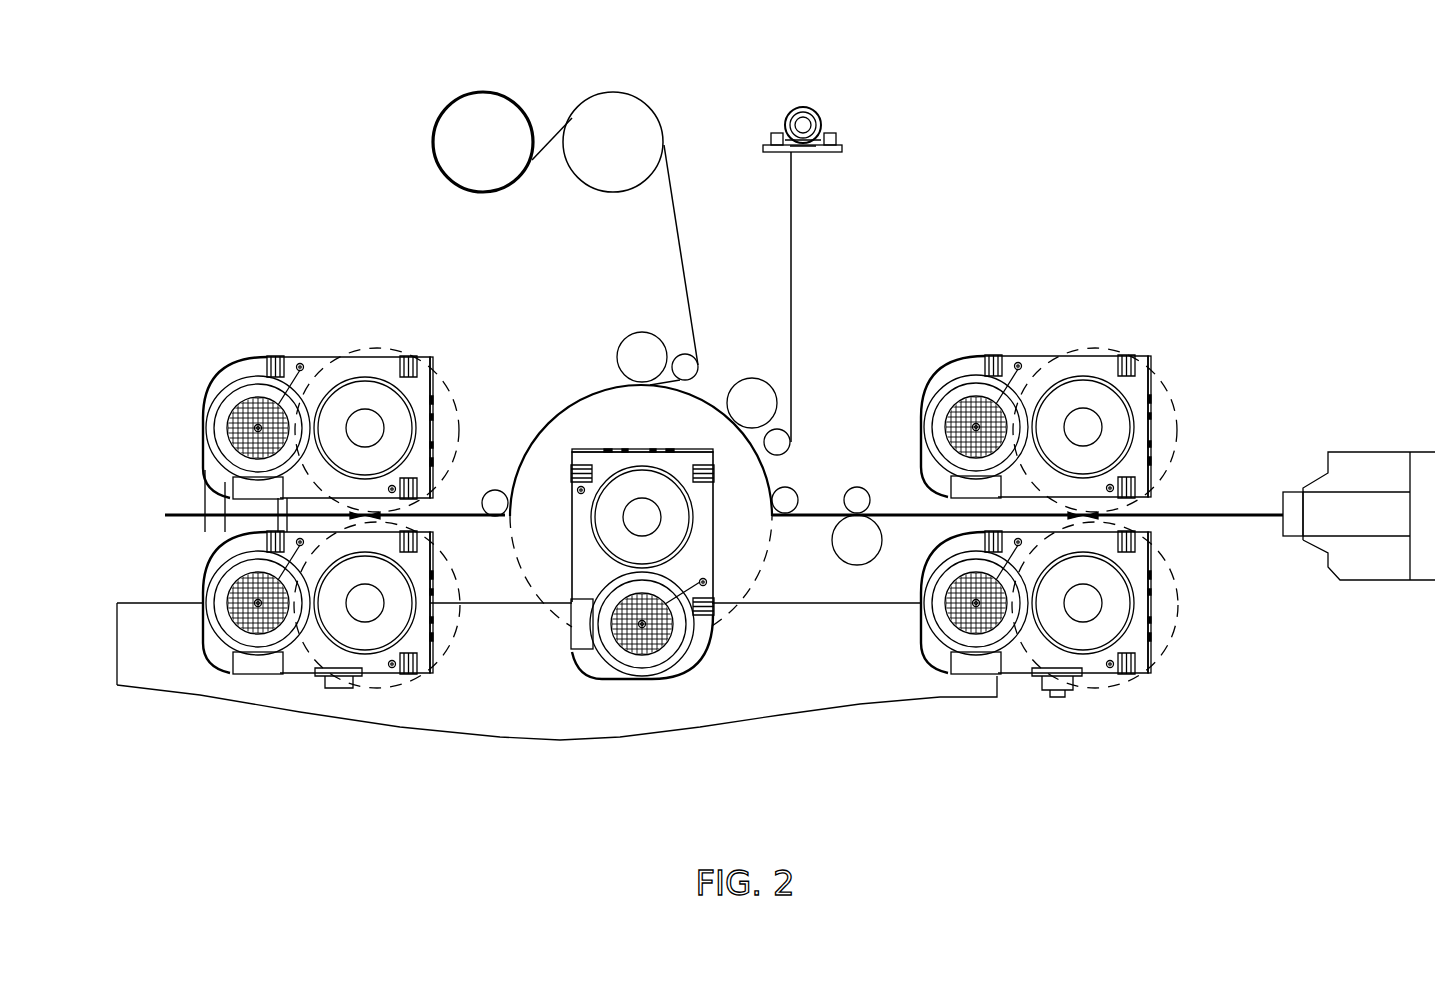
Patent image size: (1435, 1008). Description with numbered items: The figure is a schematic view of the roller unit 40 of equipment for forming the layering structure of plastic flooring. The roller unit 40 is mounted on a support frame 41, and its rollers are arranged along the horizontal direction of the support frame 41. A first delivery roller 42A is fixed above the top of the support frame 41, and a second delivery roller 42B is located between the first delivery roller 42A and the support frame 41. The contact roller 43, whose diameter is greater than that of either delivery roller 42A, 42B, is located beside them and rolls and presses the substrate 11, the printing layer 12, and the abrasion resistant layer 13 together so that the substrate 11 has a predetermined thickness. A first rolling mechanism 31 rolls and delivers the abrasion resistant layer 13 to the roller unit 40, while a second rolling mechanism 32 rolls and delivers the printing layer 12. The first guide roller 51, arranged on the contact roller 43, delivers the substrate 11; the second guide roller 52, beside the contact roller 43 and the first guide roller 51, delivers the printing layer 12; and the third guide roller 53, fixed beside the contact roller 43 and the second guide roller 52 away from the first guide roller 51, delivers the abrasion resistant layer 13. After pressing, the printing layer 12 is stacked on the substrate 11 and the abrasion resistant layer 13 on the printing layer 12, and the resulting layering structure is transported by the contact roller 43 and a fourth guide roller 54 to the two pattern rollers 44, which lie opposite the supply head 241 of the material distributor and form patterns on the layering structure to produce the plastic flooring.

The substrate 11 is at (1220, 512).
The printing layer 12 is at (791, 232).
The abrasion resistant layer 13 is at (679, 232).
The first rolling mechanism 31 is at (486, 103).
The second rolling mechanism 32 is at (813, 110).
The roller unit 40 is at (1095, 107).
The support frame 41 is at (137, 618).
The first delivery roller 42A is at (1090, 335).
The second delivery roller 42B is at (1168, 620).
The contact roller 43 is at (753, 587).
The pattern rollers 44 is at (363, 340).
The first guide roller 51 is at (790, 495).
The second guide roller 52 is at (778, 433).
The third guide roller 53 is at (683, 352).
The fourth guide roller 54 is at (492, 497).
The supply head 241 is at (1358, 468).